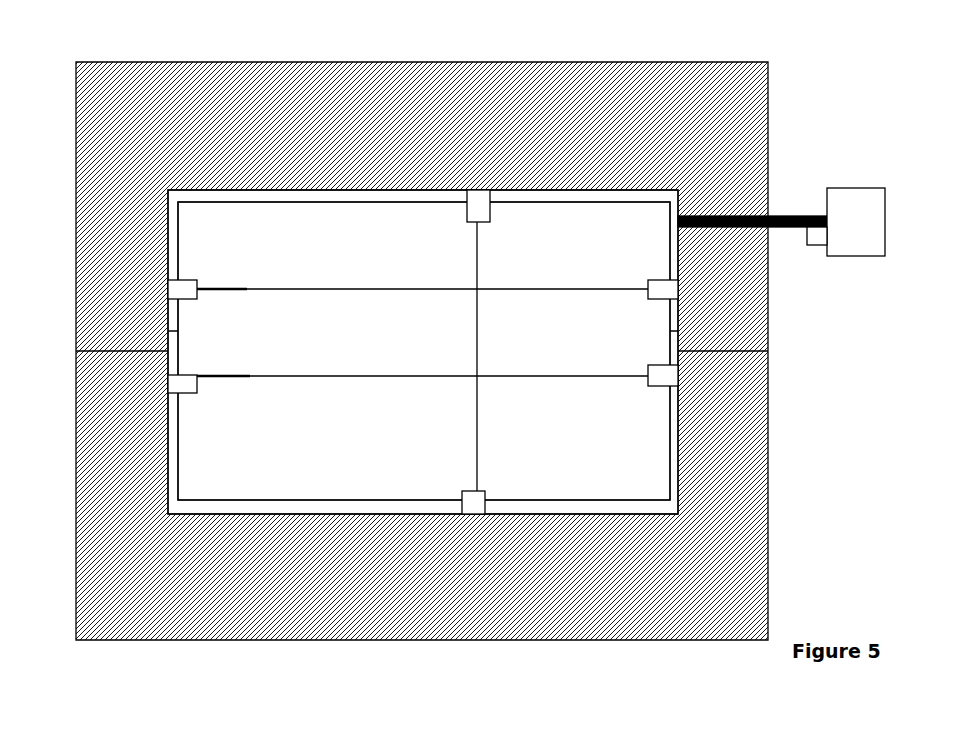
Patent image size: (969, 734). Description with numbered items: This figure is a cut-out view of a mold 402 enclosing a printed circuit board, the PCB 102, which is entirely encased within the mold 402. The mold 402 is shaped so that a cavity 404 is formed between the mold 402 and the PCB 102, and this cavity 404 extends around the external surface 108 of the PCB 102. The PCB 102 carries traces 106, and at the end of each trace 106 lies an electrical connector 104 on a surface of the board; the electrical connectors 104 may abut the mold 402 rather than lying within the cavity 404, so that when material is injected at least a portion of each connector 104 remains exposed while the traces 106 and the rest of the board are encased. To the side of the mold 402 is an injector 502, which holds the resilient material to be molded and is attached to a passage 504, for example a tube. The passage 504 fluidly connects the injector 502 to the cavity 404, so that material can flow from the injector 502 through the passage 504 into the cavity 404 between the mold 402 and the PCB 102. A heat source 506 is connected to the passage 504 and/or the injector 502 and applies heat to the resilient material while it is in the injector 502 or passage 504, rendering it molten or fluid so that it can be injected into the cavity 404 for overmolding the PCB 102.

The PCB 102 is at (617, 420).
The electrical connectors 104 is at (479, 190).
The traces 106 is at (248, 380).
The surface 108 is at (340, 248).
The mold 402 is at (733, 496).
The cavity 404 is at (259, 196).
The injector 502 is at (857, 207).
The passage 504 is at (788, 215).
The heat source 506 is at (816, 246).